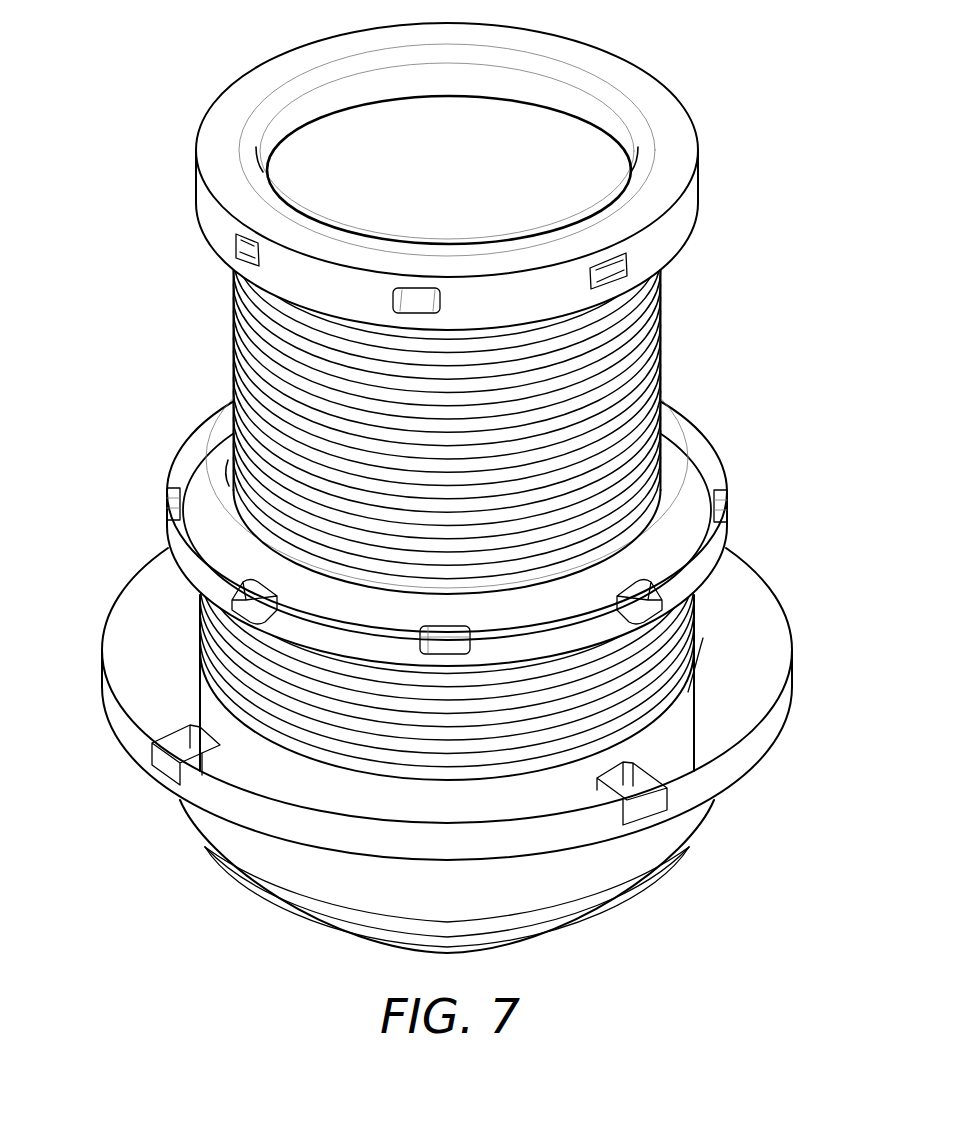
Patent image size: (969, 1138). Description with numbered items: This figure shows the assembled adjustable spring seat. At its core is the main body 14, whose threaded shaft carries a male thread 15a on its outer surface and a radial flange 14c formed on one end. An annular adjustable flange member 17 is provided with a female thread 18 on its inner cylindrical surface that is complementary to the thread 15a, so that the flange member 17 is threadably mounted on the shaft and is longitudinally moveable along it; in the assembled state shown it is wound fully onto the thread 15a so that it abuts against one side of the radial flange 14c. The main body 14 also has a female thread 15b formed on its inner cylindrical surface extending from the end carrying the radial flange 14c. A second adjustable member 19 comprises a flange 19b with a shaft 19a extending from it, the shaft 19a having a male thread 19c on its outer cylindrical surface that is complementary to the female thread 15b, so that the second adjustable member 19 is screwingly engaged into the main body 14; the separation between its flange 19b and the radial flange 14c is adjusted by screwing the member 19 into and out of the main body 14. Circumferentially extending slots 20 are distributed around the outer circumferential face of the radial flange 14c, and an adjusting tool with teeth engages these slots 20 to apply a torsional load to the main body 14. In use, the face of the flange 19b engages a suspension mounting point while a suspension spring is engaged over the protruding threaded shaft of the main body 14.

The second adjustable member 19 is at (630, 72).
The shaft 19a is at (233, 328).
The flange 19b is at (248, 72).
The male thread 19c is at (660, 344).
The main body 14 is at (703, 638).
The radial flange 14c is at (693, 533).
The male thread 15a is at (202, 643).
The female thread 15b is at (260, 530).
The circumferentially extending slots 20 is at (202, 607).
The adjustable flange member 17 is at (792, 650).
The female thread 18 is at (658, 705).